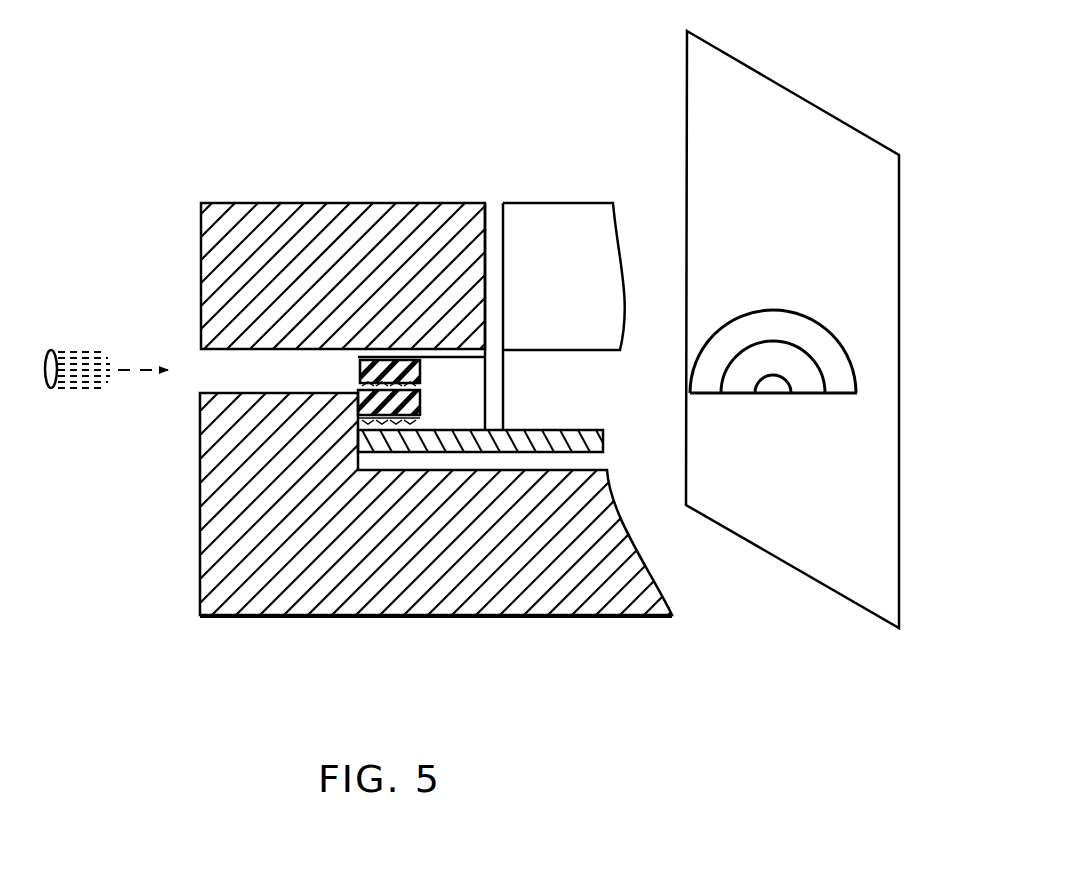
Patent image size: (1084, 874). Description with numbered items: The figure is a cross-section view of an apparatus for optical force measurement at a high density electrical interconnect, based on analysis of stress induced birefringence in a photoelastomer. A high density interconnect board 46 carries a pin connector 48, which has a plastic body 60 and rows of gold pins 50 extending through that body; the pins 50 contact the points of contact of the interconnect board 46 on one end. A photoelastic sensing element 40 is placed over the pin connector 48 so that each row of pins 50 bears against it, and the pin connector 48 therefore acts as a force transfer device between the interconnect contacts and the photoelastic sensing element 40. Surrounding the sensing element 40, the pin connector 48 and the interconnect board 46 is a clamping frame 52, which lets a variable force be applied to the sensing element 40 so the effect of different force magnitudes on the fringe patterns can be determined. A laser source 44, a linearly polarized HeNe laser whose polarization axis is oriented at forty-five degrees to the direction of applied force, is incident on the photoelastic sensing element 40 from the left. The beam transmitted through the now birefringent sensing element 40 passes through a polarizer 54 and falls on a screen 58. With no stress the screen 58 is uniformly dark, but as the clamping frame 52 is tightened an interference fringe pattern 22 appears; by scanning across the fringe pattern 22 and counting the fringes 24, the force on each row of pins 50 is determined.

The fringe pattern 22 is at (748, 400).
The fringes 24 is at (794, 338).
The photoelastic sensing element 40 is at (422, 373).
The laser source 44 is at (82, 334).
The high density interconnect board 46 is at (442, 458).
The pin connector 48 is at (360, 418).
The pins 50 is at (418, 423).
The clamping frame 52 is at (198, 277).
The polarizer 54 is at (490, 288).
The screen 58 is at (798, 92).
The plastic body 60 is at (422, 408).